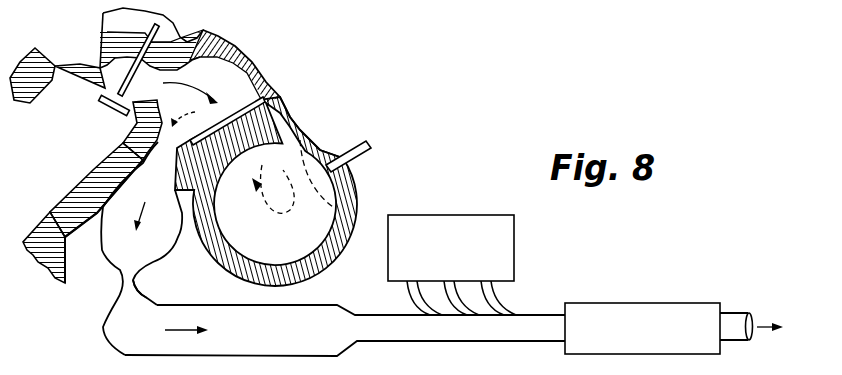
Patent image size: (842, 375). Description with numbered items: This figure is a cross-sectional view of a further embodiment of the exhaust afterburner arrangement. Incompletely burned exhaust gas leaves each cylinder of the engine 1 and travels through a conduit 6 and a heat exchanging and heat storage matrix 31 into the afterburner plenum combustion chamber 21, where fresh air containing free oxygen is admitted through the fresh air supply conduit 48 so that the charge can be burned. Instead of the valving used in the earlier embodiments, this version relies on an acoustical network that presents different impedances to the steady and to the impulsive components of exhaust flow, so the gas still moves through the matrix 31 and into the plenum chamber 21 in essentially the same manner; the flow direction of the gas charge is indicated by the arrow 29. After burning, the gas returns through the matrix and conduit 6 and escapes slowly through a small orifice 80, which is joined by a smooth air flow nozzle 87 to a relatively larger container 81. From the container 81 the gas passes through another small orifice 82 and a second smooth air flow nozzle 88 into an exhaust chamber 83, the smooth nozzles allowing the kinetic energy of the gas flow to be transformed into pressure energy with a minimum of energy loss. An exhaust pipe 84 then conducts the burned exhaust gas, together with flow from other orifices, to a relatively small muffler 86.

The engine 1 is at (60, 40).
The conduit 6 is at (232, 47).
The afterburner plenum combustion chamber 21 is at (293, 136).
The flow direction arrow 29 is at (190, 105).
The heat exchanging and heat storage matrix 31 is at (276, 103).
The fresh air supply conduit 48 is at (356, 150).
The orifice 80 is at (134, 128).
The container 81 is at (98, 222).
The orifice 82 is at (122, 283).
The exhaust chamber 83 is at (104, 341).
The exhaust pipe 84 is at (373, 315).
The muffler 86 is at (670, 303).
The smooth air flow nozzle 87 is at (158, 162).
The smooth air flow nozzle 88 is at (147, 285).